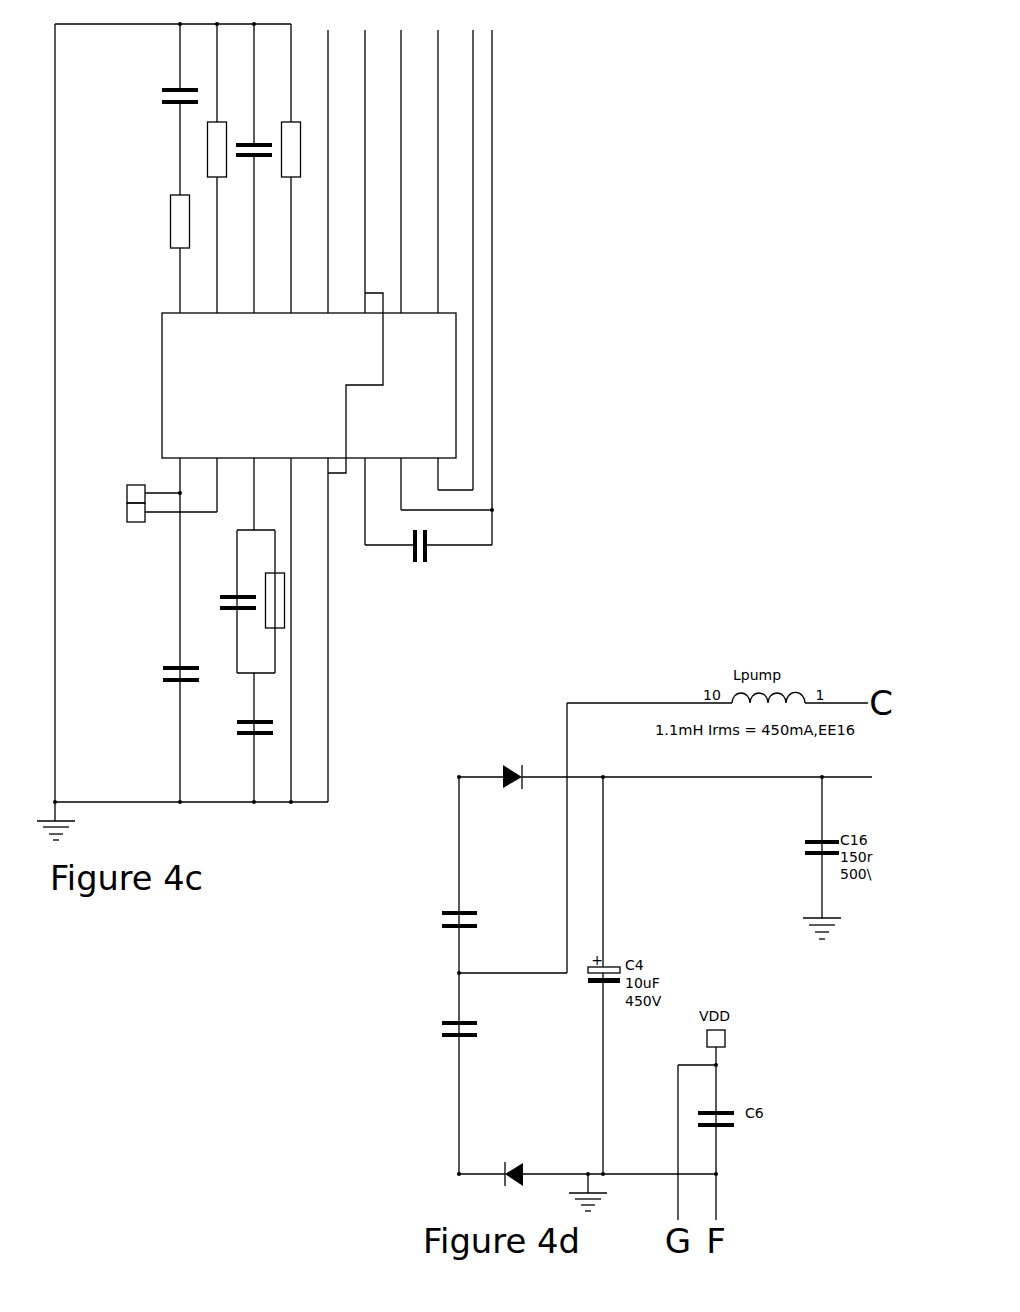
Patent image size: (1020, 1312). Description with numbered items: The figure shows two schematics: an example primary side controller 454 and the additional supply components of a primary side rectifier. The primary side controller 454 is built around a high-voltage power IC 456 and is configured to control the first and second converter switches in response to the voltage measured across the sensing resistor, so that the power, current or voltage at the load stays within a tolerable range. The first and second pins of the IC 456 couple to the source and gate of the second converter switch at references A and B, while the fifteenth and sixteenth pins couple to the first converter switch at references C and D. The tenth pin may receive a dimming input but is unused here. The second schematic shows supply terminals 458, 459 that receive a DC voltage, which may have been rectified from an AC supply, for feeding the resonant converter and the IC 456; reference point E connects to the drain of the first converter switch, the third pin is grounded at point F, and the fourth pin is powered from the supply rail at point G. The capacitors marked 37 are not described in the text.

In FIG. 4c, the primary side controller 454 is at (566, 87).
In FIG. 4c, the high-voltage power IC 456 is at (456, 349).
In FIG. 4d, the supply terminal 458 is at (459, 777).
In FIG. 4d, the supply terminal 459 is at (459, 1174).
In FIG. 4d, the charge pump capacitors (C3, C7) 37 is at (496, 975).